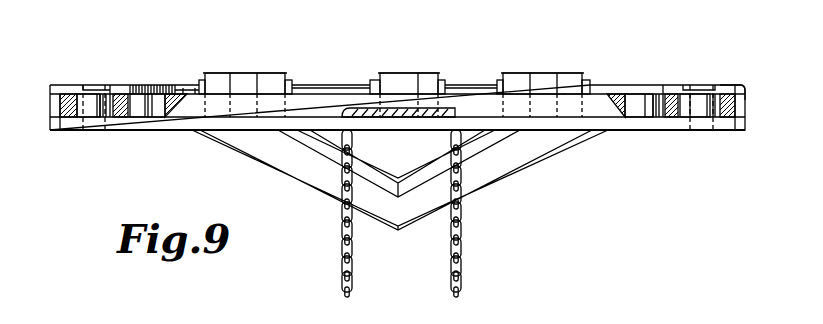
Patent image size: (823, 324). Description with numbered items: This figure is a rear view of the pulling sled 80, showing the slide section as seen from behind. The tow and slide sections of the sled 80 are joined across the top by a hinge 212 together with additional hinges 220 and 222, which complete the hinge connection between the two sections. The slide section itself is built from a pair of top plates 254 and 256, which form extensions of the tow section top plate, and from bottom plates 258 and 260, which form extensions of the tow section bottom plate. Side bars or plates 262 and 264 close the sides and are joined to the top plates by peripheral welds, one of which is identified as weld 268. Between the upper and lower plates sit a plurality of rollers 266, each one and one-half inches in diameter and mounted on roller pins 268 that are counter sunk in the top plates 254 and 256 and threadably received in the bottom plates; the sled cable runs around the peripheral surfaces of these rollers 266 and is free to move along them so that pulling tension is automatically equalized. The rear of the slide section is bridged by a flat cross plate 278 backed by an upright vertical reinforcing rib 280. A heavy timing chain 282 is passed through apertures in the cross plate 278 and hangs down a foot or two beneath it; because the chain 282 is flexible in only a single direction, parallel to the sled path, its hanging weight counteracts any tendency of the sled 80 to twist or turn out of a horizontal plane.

The pulling sled 80 is at (631, 52).
The hinge 212 is at (250, 73).
The hinge 220 is at (410, 73).
The hinge 222 is at (536, 73).
The top plate 254 is at (121, 90).
The top plate 256 is at (674, 90).
The bottom plate 258 is at (118, 124).
The bottom plate 260 is at (663, 122).
The side bar 262 is at (55, 110).
The side bar 264 is at (743, 112).
The roller 266 is at (57, 88).
The roller pin 268 is at (741, 88).
The flat cross plate 278 is at (552, 132).
The upright vertical reinforcing rib 280 is at (473, 94).
The timing chain 282 is at (356, 108).